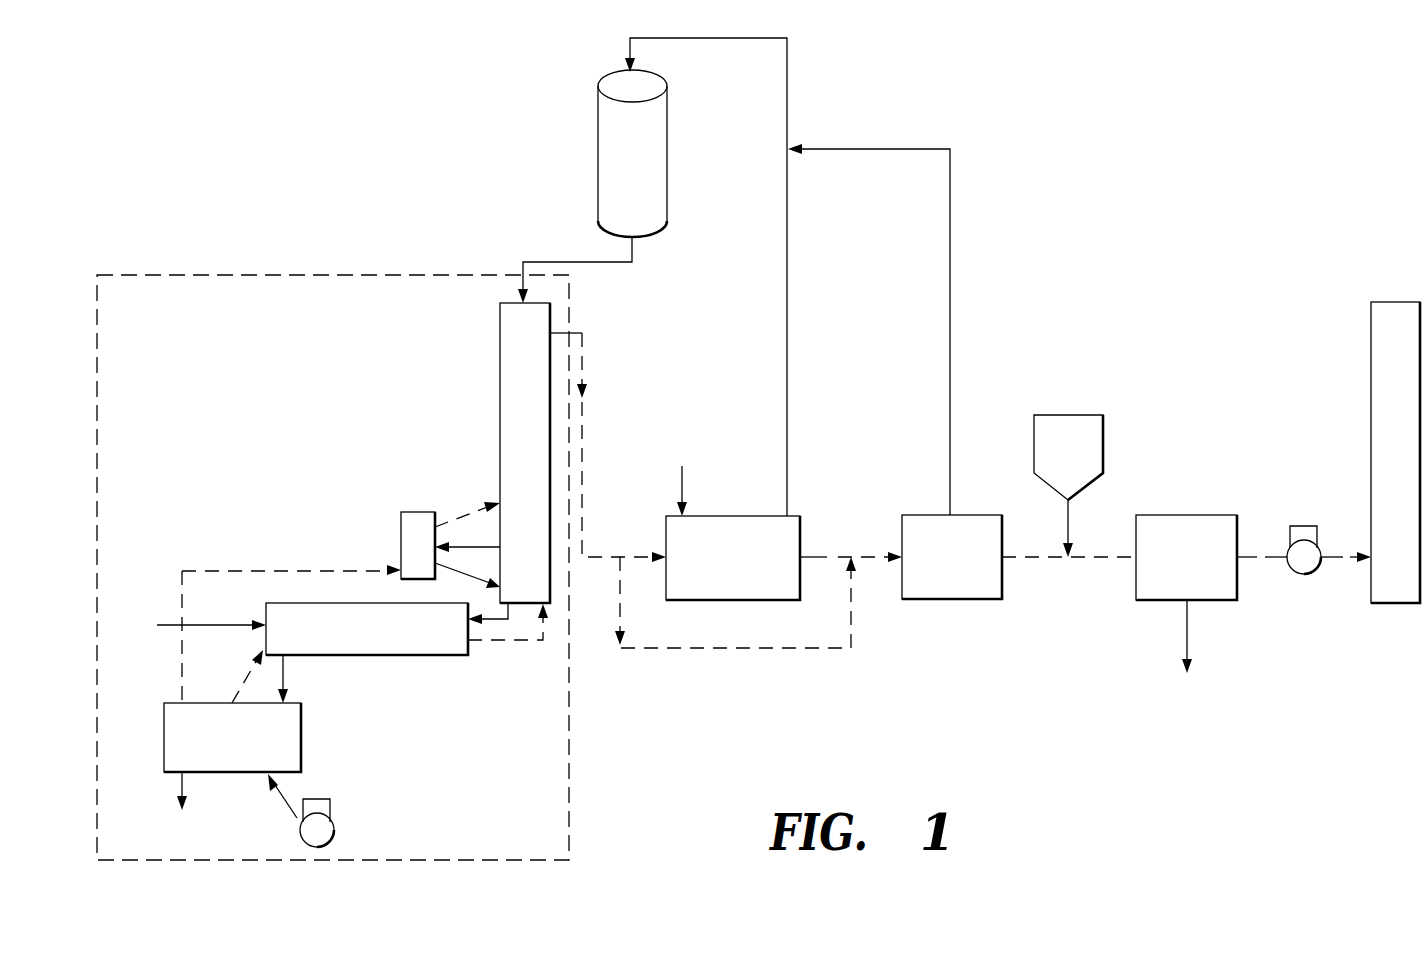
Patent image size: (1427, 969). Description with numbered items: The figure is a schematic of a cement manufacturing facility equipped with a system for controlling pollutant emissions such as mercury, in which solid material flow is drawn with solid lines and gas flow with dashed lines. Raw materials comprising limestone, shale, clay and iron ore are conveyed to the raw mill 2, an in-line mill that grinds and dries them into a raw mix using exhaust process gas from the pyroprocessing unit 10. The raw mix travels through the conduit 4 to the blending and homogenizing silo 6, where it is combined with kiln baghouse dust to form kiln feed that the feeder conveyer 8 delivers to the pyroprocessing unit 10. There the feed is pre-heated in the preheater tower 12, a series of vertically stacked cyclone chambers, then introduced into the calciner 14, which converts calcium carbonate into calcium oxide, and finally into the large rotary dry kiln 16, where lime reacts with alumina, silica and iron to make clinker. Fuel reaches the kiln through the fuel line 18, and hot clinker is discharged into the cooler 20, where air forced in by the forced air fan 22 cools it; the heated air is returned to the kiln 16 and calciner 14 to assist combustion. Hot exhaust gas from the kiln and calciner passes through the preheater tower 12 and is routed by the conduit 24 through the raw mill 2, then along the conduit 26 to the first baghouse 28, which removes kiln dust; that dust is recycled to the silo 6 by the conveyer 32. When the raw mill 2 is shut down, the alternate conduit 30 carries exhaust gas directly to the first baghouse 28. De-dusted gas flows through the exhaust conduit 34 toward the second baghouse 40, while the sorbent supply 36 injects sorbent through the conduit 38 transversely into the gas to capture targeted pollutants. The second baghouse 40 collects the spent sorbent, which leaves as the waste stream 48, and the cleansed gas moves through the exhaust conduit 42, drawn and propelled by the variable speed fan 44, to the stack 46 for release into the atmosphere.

The raw mill 2 is at (726, 565).
The conduit 4 is at (787, 311).
The blending and homogenizing silo 6 is at (641, 166).
The feeder conveyer 8 is at (602, 263).
The pyroprocessing unit 10 is at (333, 567).
The preheater tower 12 is at (513, 460).
The calciner 14 is at (406, 557).
The dry kiln 16 is at (353, 636).
The fuel line 18 is at (213, 622).
The cooler 20 is at (220, 744).
The forced air fan 22 is at (320, 828).
The conduit 24 is at (582, 487).
The conduit 26 is at (833, 556).
The first baghouse 28 is at (940, 563).
The alternate conduit 30 is at (750, 652).
The conveyer 32 is at (950, 347).
The exhaust conduit 34 is at (1040, 562).
The sorbent supply 36 is at (1056, 454).
The conduit 38 is at (1068, 520).
The second baghouse 40 is at (1175, 565).
The exhaust conduit 42 is at (1273, 560).
The fan 44 is at (1300, 525).
The stack 46 is at (1383, 430).
The waste stream 48 is at (1204, 640).